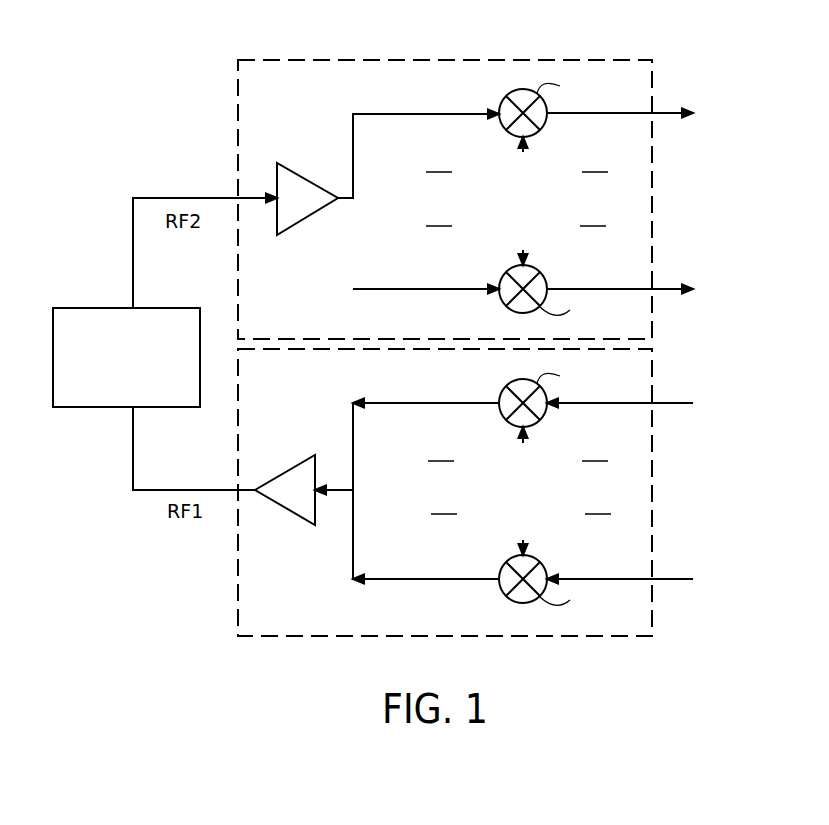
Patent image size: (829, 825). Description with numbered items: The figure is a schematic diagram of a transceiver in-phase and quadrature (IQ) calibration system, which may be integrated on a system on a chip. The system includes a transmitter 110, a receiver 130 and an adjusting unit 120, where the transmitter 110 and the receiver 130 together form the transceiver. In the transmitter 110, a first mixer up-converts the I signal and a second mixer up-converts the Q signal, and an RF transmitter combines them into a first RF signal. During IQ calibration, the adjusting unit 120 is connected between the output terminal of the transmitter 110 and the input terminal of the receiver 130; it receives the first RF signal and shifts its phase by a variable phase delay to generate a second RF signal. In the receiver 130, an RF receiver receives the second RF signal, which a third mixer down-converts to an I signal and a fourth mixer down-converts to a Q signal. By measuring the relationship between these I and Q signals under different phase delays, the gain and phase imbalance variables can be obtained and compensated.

The transmitter 110 is at (238, 606).
The adjusting unit 120 is at (112, 307).
The receiver 130 is at (258, 59).